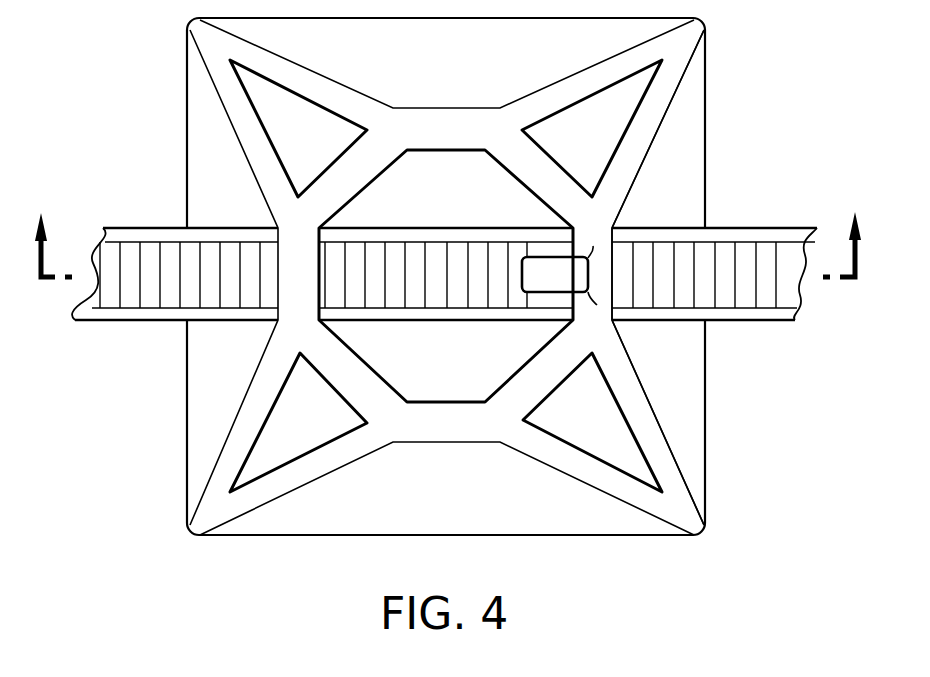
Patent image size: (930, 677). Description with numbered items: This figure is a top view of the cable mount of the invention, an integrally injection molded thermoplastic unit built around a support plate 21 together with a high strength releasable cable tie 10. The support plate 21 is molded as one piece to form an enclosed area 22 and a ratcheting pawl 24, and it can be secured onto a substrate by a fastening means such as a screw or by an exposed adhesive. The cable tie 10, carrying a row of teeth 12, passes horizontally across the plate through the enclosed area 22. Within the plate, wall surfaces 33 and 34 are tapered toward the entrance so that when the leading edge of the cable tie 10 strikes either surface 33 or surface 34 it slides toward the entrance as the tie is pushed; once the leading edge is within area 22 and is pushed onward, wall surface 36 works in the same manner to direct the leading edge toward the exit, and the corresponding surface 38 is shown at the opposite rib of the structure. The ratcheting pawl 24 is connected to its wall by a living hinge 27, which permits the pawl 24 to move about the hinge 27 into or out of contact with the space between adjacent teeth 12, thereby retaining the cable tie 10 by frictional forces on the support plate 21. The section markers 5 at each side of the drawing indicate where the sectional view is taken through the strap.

The section line 5- 5 is at (448, 228).
The cable tie 10 is at (729, 209).
The teeth 12 is at (405, 268).
The support plate 21 is at (690, 450).
The enclosed area 22 is at (458, 354).
The pawl 24 is at (532, 278).
The living hinge 27 is at (617, 226).
The wall surface 33 is at (639, 172).
The wall surface 34 is at (640, 373).
The wall surface 36 is at (393, 378).
The upper left rib 38 is at (361, 200).